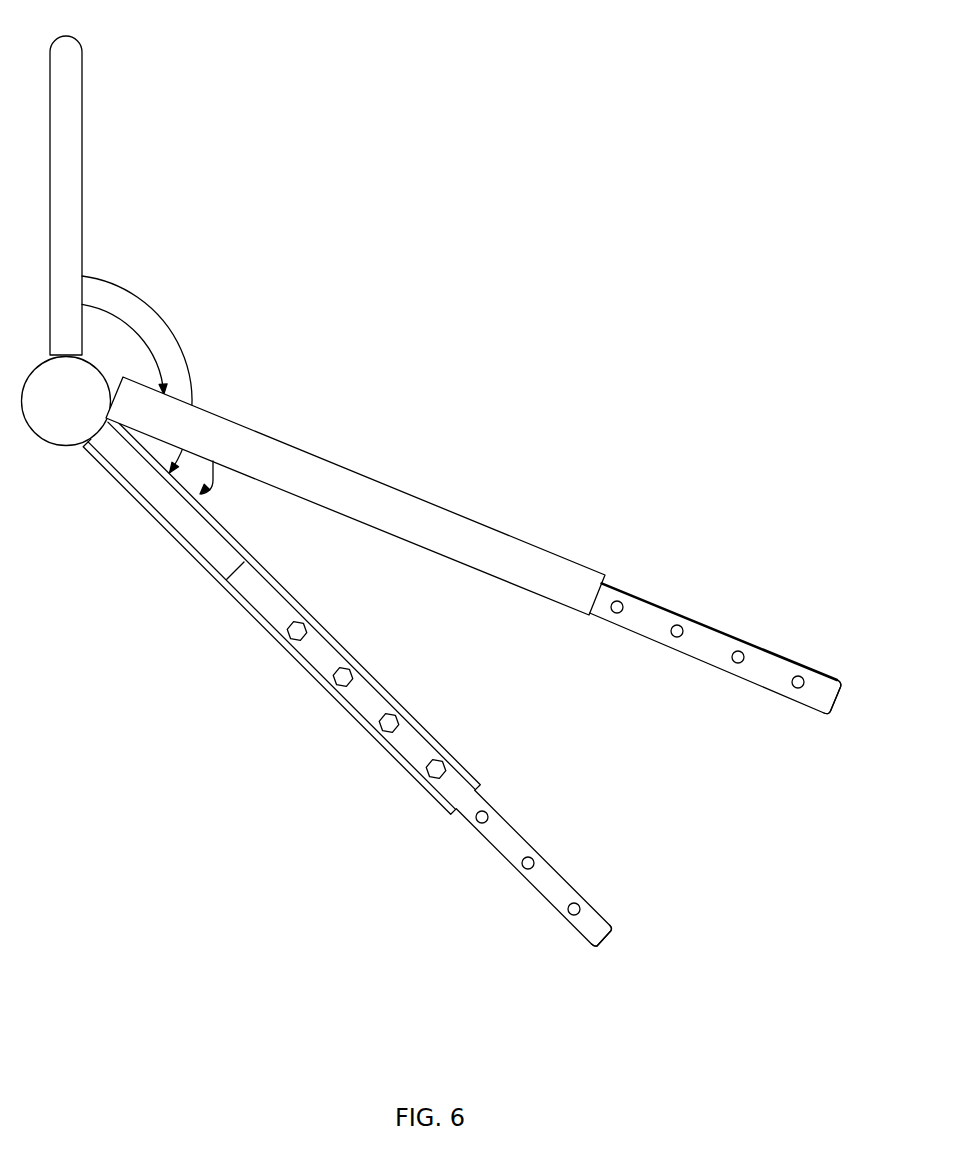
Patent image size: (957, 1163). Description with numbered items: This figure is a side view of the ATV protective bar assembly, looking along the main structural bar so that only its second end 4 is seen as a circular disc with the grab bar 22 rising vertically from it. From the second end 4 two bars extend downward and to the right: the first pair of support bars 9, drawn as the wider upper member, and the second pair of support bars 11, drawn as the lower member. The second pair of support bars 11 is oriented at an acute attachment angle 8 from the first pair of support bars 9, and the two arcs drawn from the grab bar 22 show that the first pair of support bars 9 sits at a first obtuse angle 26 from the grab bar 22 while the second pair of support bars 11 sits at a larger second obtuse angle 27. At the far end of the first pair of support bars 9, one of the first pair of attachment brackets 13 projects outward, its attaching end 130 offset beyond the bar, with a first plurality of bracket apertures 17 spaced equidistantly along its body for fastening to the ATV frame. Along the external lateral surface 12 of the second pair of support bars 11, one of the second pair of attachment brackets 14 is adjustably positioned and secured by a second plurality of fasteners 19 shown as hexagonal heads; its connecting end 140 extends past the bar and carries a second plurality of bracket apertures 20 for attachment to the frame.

The second end 4 is at (52, 428).
The attachment angle 8 is at (215, 481).
The first pair of support bars 9 is at (263, 438).
The second pair of support bars 11 is at (140, 503).
The external lateral surface 12 is at (203, 566).
The first pair of attachment brackets 13 is at (605, 610).
The second pair of attachment brackets 14 is at (547, 890).
The first plurality of bracket apertures 17 is at (676, 636).
The second plurality of fasteners 19 is at (344, 676).
The second plurality of bracket apertures 20 is at (533, 866).
The grab bar 22 is at (96, 88).
The first obtuse angle 26 is at (160, 352).
The second obtuse angle 27 is at (152, 302).
The attaching end 130 is at (843, 693).
The connecting end 140 is at (607, 936).